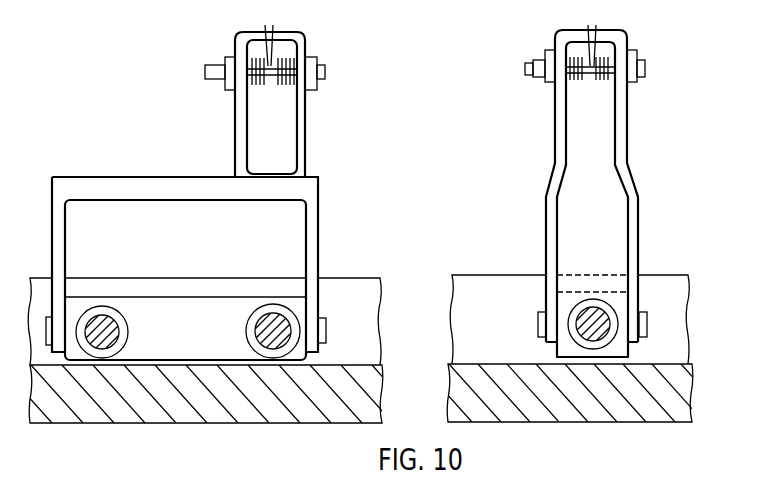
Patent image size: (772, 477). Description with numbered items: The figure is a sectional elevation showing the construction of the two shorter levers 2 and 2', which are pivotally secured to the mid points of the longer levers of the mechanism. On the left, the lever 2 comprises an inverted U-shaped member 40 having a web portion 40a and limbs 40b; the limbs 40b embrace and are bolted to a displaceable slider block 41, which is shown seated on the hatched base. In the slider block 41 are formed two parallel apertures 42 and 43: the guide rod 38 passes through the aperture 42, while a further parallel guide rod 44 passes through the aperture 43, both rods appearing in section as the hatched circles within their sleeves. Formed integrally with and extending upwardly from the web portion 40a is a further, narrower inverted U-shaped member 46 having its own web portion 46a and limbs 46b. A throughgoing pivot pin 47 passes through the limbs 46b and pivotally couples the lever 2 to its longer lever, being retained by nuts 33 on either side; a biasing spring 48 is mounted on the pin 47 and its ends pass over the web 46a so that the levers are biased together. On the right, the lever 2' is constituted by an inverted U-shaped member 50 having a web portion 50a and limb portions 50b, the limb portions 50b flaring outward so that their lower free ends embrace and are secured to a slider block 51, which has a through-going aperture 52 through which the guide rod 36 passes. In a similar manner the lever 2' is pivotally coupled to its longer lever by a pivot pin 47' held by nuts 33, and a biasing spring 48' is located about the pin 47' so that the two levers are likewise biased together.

The lever 2 is at (204, 278).
The lever 2' is at (570, 271).
The bars 33 is at (231, 57).
The guide rod 36 is at (640, 312).
The guide rod 38 is at (287, 316).
The inverted U-shaped member 40 is at (119, 177).
The web portion 40a is at (157, 203).
The limbs 40b is at (51, 212).
The slider block 41 is at (200, 298).
The aperture 42 is at (270, 304).
The aperture 43 is at (90, 306).
The guide rod 44 is at (110, 315).
The inverted U-shaped member 46 is at (309, 131).
The web portion 46a is at (284, 31).
The limbs 46b is at (236, 115).
The pivot pin 47 is at (291, 78).
The pivot pin 47' is at (607, 75).
The biasing spring 48 is at (273, 84).
The biasing spring 48' is at (589, 74).
The inverted U-shaped member 50 is at (630, 114).
The web portion 50a is at (608, 30).
The limb portions 50b is at (556, 138).
The slider block 51 is at (613, 298).
The sleeve 52 is at (568, 316).